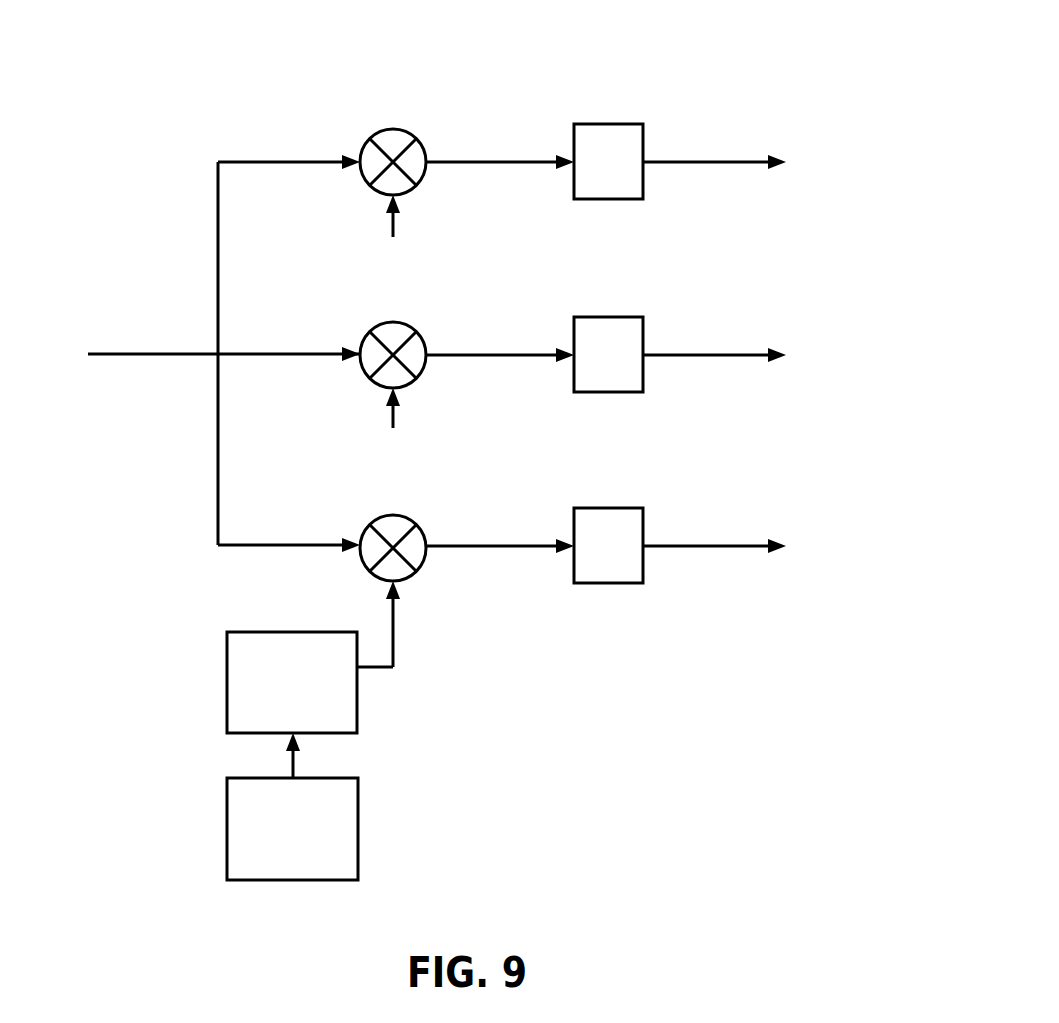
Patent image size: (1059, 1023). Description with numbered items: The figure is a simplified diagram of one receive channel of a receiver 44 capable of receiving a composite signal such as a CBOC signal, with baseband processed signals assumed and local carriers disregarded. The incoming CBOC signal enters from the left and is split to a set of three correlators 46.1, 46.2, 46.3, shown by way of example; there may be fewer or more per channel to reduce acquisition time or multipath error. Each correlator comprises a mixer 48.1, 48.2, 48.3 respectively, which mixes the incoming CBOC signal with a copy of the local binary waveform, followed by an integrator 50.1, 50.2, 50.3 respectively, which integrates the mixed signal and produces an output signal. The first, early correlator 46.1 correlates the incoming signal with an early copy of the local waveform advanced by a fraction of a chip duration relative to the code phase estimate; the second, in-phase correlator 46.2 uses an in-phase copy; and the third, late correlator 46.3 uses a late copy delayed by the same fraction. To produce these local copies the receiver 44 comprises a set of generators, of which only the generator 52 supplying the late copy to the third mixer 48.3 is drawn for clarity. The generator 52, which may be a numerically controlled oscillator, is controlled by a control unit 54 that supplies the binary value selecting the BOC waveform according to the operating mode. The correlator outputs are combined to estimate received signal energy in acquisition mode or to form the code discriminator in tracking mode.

The receiver 44 is at (552, 88).
The mixer 48.1 is at (382, 130).
The mixer 48.2 is at (383, 326).
The mixer 48.3 is at (383, 517).
The integrator 50.1 is at (625, 199).
The integrator 50.2 is at (625, 392).
The integrator 50.3 is at (620, 583).
The early correlator 46.1 is at (706, 121).
The in-phase correlator 46.2 is at (716, 322).
The late correlator 46.3 is at (710, 507).
The generator 52 is at (357, 722).
The control unit 54 is at (358, 828).